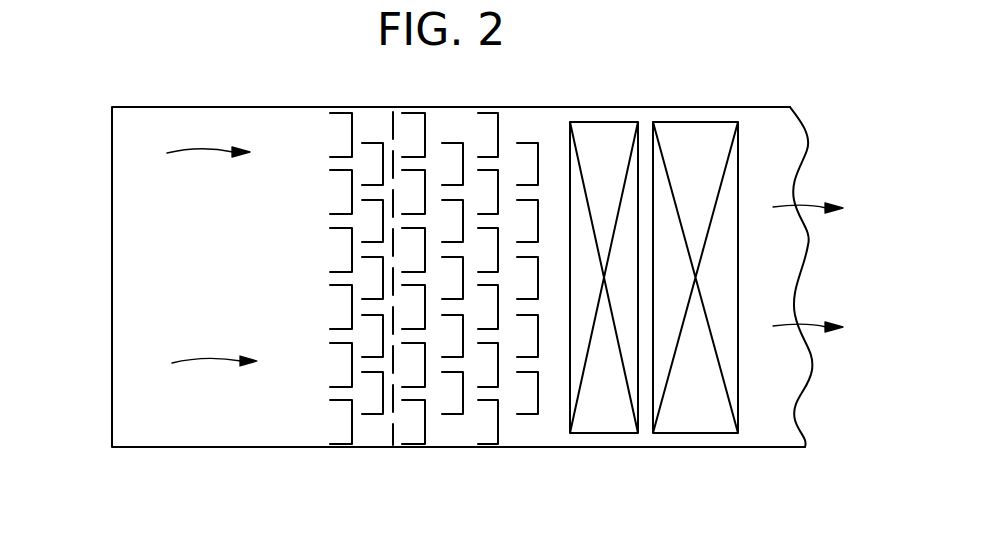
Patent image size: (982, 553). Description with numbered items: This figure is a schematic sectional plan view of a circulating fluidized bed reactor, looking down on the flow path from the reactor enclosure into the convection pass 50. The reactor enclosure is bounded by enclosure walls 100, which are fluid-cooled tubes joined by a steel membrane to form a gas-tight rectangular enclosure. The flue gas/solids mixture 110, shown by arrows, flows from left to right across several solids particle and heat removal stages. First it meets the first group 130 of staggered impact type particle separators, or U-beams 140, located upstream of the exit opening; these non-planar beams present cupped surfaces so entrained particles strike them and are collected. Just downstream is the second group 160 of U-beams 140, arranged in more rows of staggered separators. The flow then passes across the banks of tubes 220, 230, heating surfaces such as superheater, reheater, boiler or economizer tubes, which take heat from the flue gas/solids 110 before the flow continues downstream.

The enclosure walls 100 is at (222, 107).
The flue gas/solids mixture 110 is at (203, 152).
The first group of staggered impact type particle separators 130 is at (390, 98).
The second group of impact type particle separators 160 is at (533, 98).
The impact type particle separators (U-beams) 140 is at (390, 283).
The bank of tubes 220 is at (605, 137).
The bank of tubes 230 is at (695, 137).
The convection pass 50 is at (768, 127).